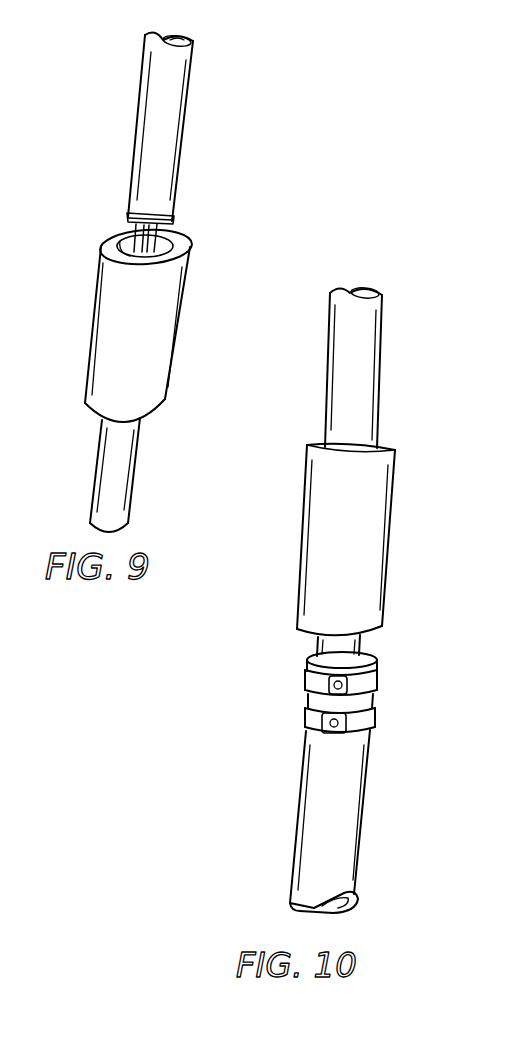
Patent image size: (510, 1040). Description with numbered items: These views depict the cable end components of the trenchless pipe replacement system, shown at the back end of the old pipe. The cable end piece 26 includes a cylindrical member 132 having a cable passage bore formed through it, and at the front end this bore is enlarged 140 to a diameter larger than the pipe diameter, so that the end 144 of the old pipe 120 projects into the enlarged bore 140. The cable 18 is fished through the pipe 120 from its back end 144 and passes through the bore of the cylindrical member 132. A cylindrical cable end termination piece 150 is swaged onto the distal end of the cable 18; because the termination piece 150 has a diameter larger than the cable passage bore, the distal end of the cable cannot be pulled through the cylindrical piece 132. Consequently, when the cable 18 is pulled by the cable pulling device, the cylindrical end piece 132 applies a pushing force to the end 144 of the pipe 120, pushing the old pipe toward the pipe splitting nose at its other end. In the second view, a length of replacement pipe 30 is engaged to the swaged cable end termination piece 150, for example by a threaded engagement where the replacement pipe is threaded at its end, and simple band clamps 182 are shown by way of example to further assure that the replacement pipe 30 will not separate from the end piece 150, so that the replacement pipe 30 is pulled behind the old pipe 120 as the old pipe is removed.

In FIG. 9, the pipe 120 is at (162, 152).
In FIG. 10, the pipe 120 is at (367, 393).
In FIG. 9, the end of the pipe 144 is at (168, 220).
In FIG. 9, the cable 18 is at (170, 223).
In FIG. 9, the enlarged bore 140 is at (120, 233).
In FIG. 9, the cylindrical member 132 is at (153, 318).
In FIG. 10, the cylindrical member 132 is at (367, 523).
In FIG. 9, the cable end piece 26 is at (108, 347).
In FIG. 10, the cable end piece 26 is at (360, 585).
In FIG. 9, the cable end termination piece 150 is at (123, 467).
In FIG. 10, the cable end termination piece 150 is at (343, 653).
In FIG. 10, the band clamps 182 is at (367, 697).
In FIG. 10, the replacement pipe 30 is at (342, 775).